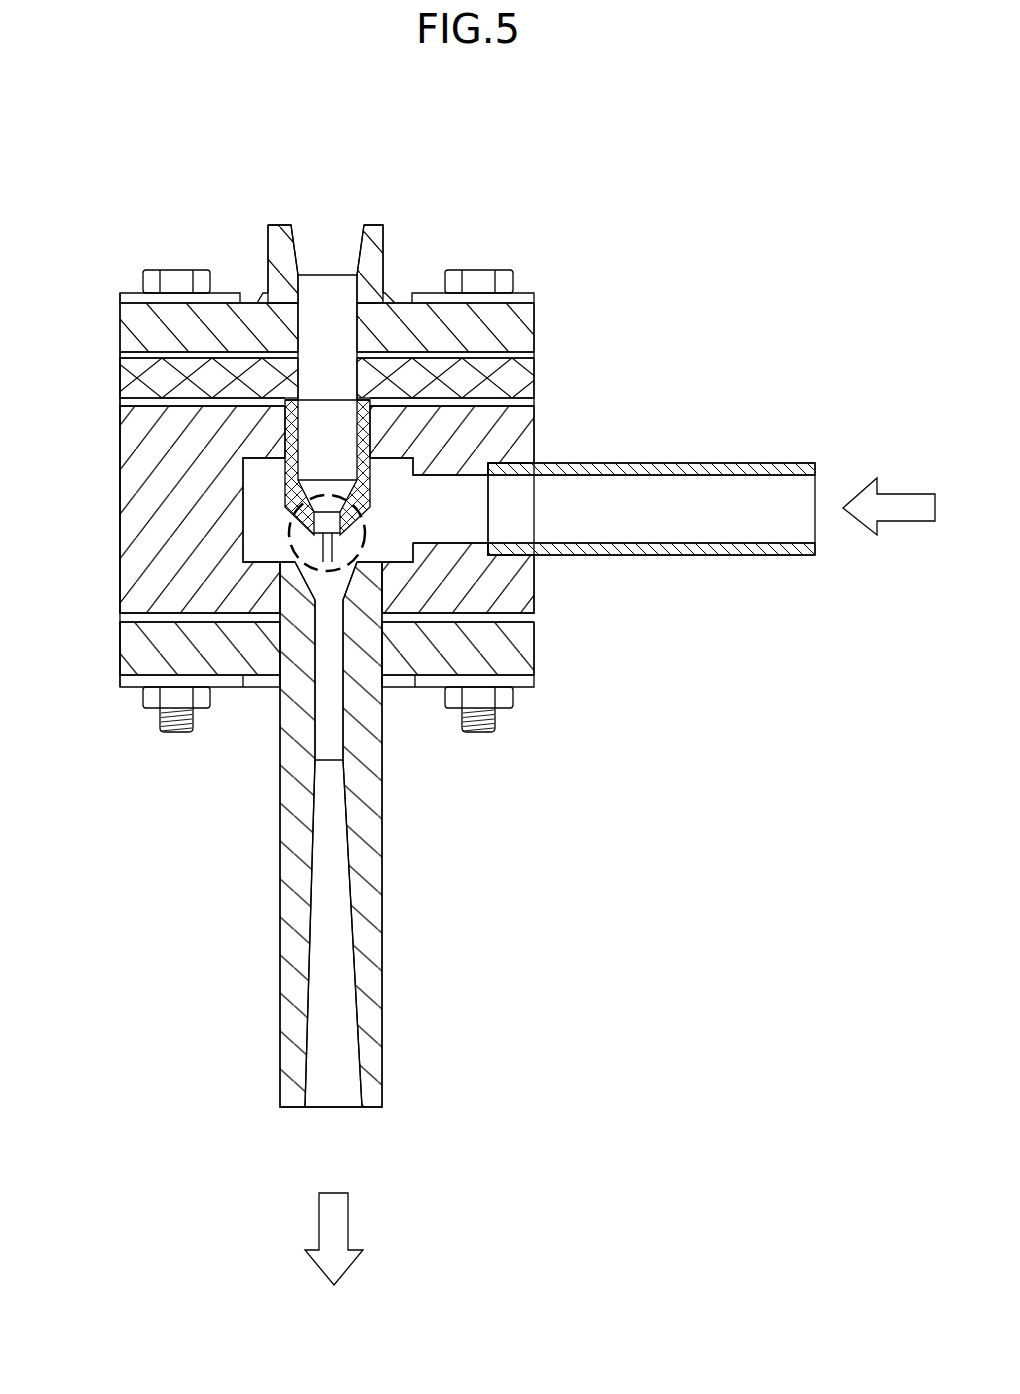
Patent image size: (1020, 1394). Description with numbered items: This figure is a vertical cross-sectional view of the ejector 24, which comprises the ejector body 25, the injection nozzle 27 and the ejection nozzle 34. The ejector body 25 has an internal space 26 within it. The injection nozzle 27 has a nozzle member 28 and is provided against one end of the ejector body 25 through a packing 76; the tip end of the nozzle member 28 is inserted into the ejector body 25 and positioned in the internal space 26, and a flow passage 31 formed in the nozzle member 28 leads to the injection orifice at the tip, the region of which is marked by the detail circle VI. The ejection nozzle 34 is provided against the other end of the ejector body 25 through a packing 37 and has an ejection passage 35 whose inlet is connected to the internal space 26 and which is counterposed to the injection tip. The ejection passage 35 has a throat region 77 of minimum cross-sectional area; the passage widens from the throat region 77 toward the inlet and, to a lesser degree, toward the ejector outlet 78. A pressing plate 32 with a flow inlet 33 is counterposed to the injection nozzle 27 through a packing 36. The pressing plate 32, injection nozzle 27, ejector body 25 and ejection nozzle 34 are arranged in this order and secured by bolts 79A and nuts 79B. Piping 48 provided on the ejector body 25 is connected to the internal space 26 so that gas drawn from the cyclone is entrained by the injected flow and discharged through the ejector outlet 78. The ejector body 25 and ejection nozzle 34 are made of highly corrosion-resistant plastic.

The ejector 24 is at (118, 698).
The ejector body 25 is at (120, 477).
The internal space 26 is at (257, 550).
The injection nozzle 27 is at (120, 372).
The nozzle member 28 is at (370, 483).
The flow passage 31 is at (307, 442).
The pressing plate 32 is at (534, 306).
The flow inlet 33 is at (322, 232).
The ejection nozzle 34 is at (383, 1000).
The ejection passage 35 is at (320, 880).
The packing 36 is at (534, 352).
The packing 37 is at (534, 612).
The piping 48 is at (768, 463).
The packing 76 is at (120, 402).
The throat region 77 is at (337, 738).
The ejector outlet 78 is at (325, 1097).
The bolts 79A is at (170, 270).
The nuts 79B is at (203, 703).
The enlarged detail region VI is at (290, 540).